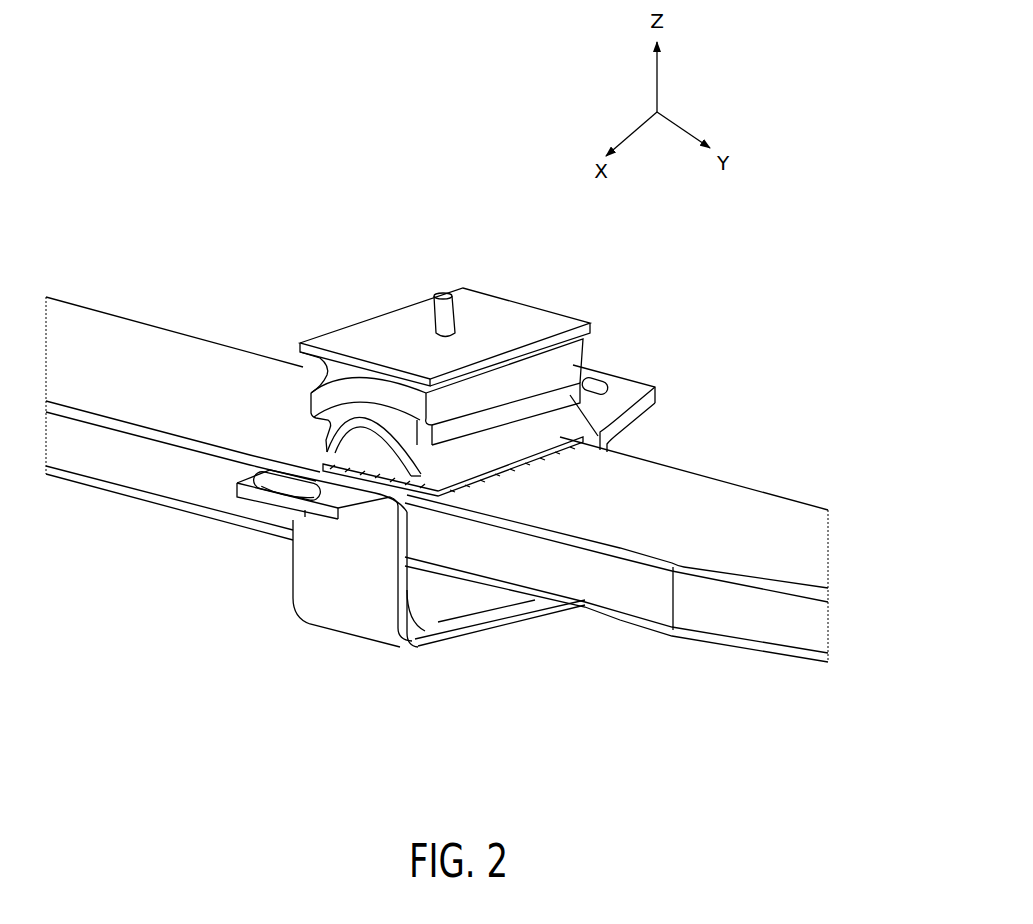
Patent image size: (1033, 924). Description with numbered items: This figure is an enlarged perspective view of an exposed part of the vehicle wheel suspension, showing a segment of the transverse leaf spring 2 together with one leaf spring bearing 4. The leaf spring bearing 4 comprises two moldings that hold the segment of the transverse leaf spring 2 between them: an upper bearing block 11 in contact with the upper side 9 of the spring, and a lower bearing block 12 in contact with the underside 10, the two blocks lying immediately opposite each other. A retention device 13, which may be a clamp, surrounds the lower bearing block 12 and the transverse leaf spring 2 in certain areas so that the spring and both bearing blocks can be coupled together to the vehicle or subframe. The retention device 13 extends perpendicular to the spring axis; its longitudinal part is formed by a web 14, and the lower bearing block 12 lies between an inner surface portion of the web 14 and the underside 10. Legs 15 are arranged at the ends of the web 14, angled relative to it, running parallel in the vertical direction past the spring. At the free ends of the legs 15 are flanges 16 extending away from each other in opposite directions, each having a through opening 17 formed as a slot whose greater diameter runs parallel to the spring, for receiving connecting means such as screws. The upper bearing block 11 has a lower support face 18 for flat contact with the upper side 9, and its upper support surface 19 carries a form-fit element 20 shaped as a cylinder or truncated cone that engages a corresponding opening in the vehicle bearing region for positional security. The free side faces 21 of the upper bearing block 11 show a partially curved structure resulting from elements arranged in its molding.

The transverse leaf spring 2 is at (92, 347).
The leaf spring bearing 4 is at (336, 305).
The upper side 9 is at (753, 525).
The underside 10 is at (755, 658).
The upper bearing block 11 is at (549, 322).
The lower bearing block 12 is at (437, 617).
The retention device 13 is at (368, 615).
The web 14 is at (498, 625).
The legs 15 is at (348, 594).
The flanges 16 is at (258, 512).
The through opening 17 is at (286, 478).
The lower support face 18 is at (492, 478).
The upper support surface 19 is at (409, 328).
The form-fit element 20 is at (447, 302).
The free side faces 21 is at (297, 388).